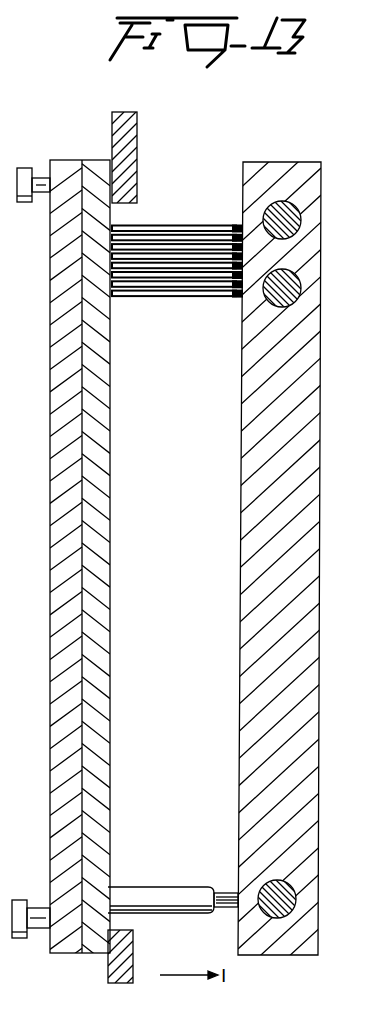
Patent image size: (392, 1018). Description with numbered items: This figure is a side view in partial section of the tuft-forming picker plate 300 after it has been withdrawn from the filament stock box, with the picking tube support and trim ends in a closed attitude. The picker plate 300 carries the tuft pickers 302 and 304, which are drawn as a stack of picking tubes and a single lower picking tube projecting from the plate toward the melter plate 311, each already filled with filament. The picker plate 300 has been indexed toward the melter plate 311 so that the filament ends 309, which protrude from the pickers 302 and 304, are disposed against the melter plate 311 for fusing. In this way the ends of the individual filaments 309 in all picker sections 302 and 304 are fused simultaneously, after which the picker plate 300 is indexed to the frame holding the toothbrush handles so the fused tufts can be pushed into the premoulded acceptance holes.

The picker plate 300 is at (93, 160).
The tuft pickers 302 is at (155, 296).
The tuft pickers 304 is at (133, 896).
The filament ends 309 is at (240, 228).
The melter plate 311 is at (312, 602).